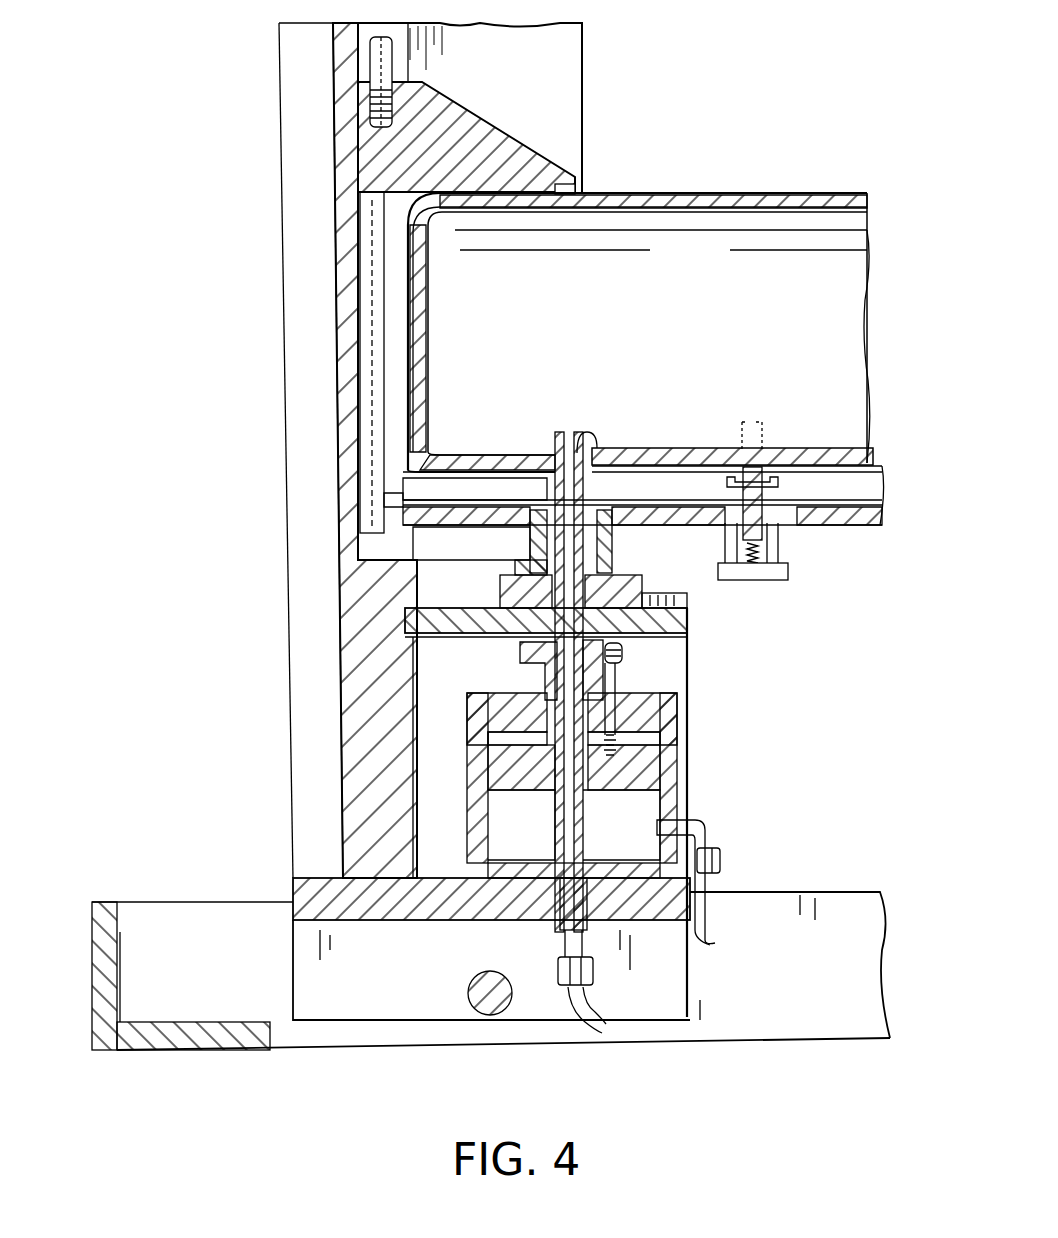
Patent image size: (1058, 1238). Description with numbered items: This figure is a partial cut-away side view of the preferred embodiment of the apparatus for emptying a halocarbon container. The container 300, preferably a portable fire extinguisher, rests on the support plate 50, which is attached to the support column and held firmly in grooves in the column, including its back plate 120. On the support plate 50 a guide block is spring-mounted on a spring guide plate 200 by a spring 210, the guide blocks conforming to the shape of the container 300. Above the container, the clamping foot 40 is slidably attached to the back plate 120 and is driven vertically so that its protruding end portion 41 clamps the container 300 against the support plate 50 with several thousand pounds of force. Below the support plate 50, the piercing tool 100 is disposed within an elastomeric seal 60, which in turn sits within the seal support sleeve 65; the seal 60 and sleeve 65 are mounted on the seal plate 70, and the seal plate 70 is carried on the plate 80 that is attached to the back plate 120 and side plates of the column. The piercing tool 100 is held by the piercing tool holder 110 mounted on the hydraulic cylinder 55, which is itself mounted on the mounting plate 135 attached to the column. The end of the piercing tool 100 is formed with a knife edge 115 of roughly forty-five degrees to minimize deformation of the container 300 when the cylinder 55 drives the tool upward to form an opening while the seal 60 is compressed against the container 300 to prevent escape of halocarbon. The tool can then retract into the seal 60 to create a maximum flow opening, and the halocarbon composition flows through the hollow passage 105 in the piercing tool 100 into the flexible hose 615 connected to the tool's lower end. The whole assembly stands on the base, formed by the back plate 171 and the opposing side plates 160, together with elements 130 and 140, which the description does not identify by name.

The clamping foot 40 is at (530, 165).
The protruding end portion 41 is at (573, 190).
The container 300 is at (768, 200).
The back plate 120 is at (300, 375).
The knife edge 115 is at (556, 430).
The support plate 50 is at (875, 513).
The piercing tool 100 is at (413, 560).
The seal 60 is at (612, 558).
The seal support sleeve 65 is at (513, 566).
The seal plate 70 is at (635, 583).
The plate 80 is at (677, 623).
The piercing tool holder 110 is at (625, 655).
The hydraulic cylinder 55 is at (683, 792).
The hollow passage 105 is at (585, 827).
The mounting plate 135 is at (300, 895).
The side plate 160 is at (793, 1027).
The back plate 171 is at (108, 982).
The bottom member 130 is at (190, 1037).
The bolt 140 is at (483, 1003).
The flexible hose 615 is at (598, 1035).
The spring 210 is at (757, 557).
The spring guide plate 200 is at (777, 572).